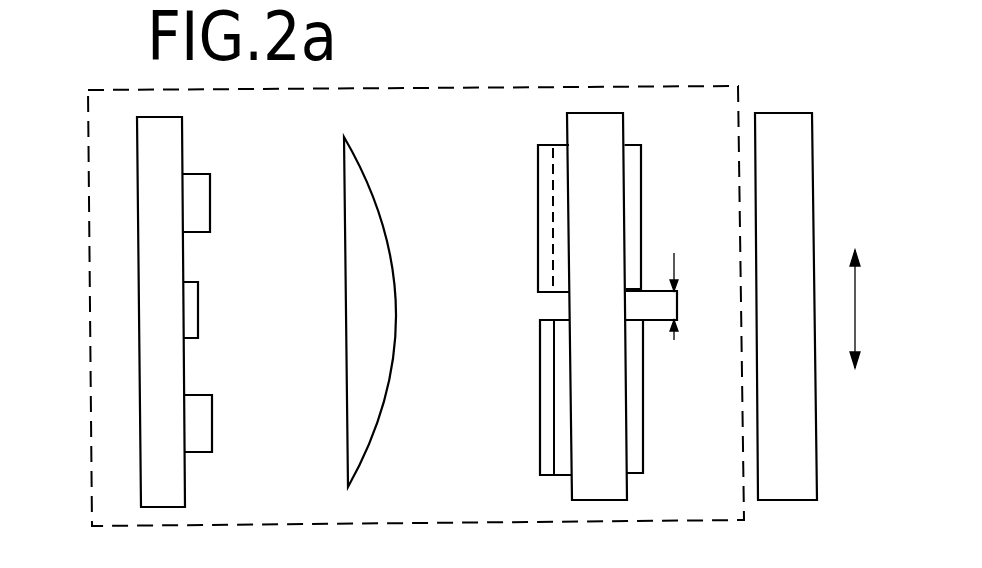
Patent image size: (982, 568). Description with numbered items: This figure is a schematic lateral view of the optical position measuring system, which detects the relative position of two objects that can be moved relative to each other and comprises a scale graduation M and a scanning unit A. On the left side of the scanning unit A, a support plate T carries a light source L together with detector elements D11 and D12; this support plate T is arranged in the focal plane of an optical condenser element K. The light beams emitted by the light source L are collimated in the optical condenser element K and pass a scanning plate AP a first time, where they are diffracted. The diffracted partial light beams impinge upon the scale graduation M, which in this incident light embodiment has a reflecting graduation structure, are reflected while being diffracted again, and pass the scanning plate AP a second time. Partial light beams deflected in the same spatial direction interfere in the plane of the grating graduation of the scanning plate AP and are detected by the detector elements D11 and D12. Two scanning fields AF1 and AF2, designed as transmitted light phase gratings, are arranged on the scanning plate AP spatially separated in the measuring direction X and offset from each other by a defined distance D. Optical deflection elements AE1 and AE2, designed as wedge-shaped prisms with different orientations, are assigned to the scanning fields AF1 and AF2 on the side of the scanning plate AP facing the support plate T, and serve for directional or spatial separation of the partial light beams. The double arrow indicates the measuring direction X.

The scanning unit A is at (88, 352).
The support plate T is at (170, 458).
The detector element D11 is at (193, 210).
The light source L is at (200, 325).
The detector element D12 is at (195, 430).
The optical condenser element K is at (370, 360).
The scanning plate AP is at (598, 477).
The optical deflection element AE1 is at (545, 168).
The scanning field AF1 is at (640, 210).
The optical deflection element AE2 is at (548, 413).
The scanning field AF2 is at (643, 455).
The distance D is at (691, 296).
The scale graduation M is at (778, 475).
The measuring direction X is at (864, 309).